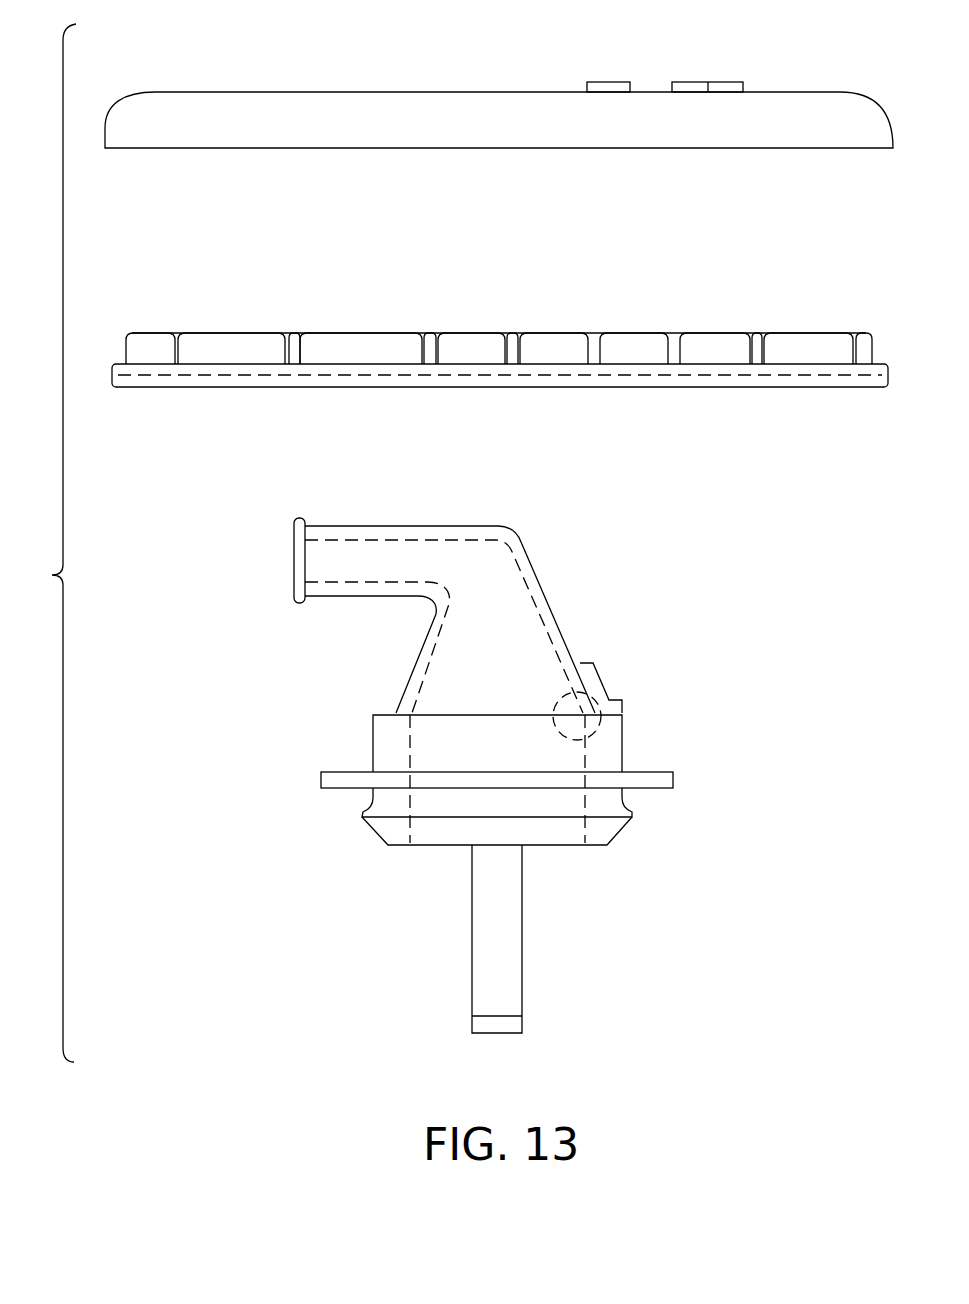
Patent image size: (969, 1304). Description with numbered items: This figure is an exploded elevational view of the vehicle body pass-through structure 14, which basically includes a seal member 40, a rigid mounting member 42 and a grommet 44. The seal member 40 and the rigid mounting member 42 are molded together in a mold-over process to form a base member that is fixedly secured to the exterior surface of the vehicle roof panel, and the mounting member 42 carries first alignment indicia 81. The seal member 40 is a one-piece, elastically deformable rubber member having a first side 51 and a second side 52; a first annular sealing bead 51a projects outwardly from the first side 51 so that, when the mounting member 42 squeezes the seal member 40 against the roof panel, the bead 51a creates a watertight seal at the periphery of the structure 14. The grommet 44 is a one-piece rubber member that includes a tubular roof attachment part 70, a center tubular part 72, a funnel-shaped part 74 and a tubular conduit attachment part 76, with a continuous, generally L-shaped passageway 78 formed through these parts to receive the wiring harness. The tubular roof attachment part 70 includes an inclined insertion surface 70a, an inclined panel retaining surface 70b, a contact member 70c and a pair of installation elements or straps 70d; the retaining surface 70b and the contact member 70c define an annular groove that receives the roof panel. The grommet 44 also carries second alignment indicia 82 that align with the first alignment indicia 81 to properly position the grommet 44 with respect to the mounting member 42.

The vehicle body pass-through structure 14 is at (47, 543).
The rigid mounting member 42 is at (793, 65).
The first alignment indicia 81 is at (613, 82).
The seal member 40 is at (507, 352).
The second side 52 is at (481, 362).
The first side 51 is at (265, 389).
The first annular sealing bead 51a is at (677, 380).
The grommet 44 is at (531, 775).
The tubular conduit attachment part 76 is at (338, 596).
The funnel-shaped part 74 is at (414, 668).
The second alignment indicia 82 is at (598, 677).
The center tubular part 72 is at (373, 747).
The passageway 78 is at (624, 740).
The tubular roof attachment part 70 is at (563, 902).
The inclined insertion surface 70a is at (618, 838).
The inclined panel retaining surface 70b is at (632, 805).
The contact member 70c is at (675, 782).
The installation elements or straps 70d is at (564, 939).